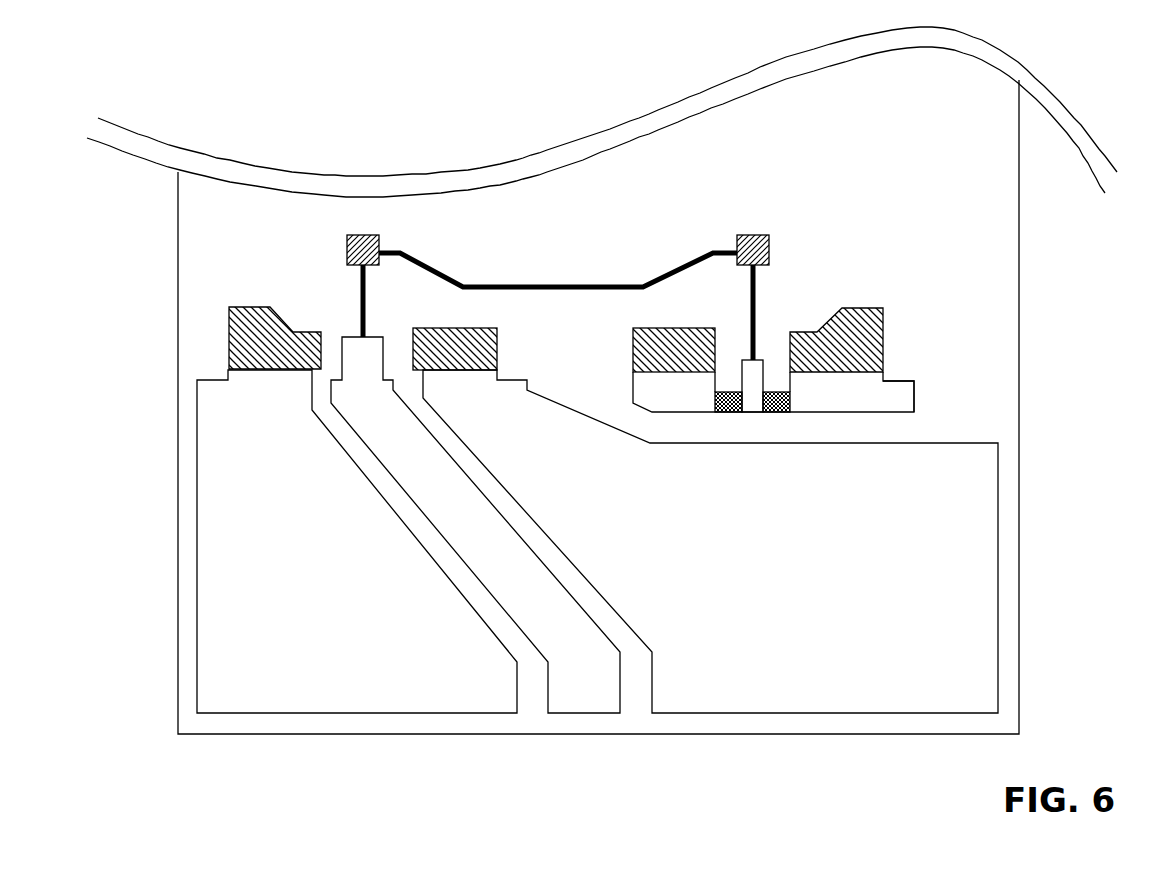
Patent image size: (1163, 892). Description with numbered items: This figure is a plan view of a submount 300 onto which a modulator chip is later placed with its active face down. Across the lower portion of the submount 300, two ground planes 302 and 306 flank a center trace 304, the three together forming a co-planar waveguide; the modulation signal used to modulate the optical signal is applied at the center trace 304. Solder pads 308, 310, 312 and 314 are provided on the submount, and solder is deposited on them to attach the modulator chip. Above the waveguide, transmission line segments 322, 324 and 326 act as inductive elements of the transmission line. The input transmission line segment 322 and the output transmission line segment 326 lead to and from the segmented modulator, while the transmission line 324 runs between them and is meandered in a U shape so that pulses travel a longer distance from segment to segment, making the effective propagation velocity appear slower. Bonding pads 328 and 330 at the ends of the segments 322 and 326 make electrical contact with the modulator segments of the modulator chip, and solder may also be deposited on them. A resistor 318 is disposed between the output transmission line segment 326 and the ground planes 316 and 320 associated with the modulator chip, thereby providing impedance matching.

The submount 300 is at (1019, 555).
The ground plane 302 is at (340, 713).
The center trace 304 is at (583, 713).
The ground plane 306 is at (824, 713).
The solder pad 308 is at (238, 307).
The solder pad 310 is at (498, 336).
The solder pad 312 is at (633, 351).
The solder pad 314 is at (855, 308).
The ground plane 316 is at (673, 413).
The resistor 318 is at (727, 415).
The ground plane 320 is at (905, 390).
The input transmission line segment 322 is at (368, 300).
The transmission line 324 is at (528, 287).
The output transmission line segment 326 is at (757, 297).
The bonding pad 328 is at (366, 238).
The bonding pad 330 is at (747, 235).